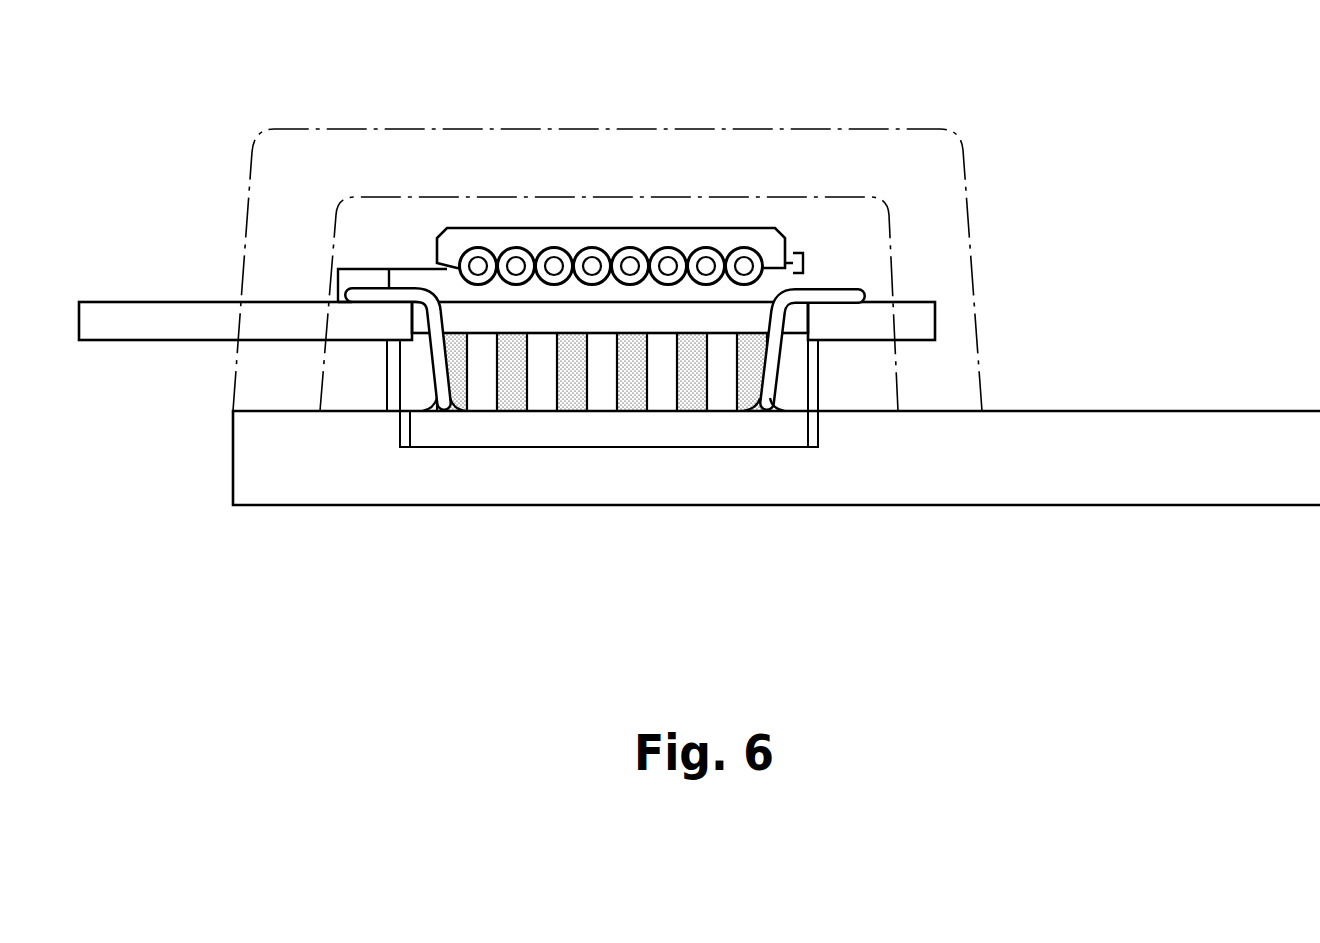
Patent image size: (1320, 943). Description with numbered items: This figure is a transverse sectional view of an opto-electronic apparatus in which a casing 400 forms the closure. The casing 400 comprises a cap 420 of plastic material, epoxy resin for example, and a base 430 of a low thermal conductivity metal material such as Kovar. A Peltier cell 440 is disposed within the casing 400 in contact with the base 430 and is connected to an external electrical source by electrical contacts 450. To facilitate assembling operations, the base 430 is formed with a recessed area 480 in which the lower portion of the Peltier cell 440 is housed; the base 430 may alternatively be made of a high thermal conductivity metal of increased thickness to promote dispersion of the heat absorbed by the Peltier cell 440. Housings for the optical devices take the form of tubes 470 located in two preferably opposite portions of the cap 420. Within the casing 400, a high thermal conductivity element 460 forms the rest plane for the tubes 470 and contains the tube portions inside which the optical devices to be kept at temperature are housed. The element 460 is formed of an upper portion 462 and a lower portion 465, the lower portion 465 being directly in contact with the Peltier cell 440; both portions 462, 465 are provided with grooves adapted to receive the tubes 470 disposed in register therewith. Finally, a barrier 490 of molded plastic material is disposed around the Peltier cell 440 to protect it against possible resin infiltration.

The casing 400 is at (223, 142).
The cap 420 is at (539, 146).
The base 430 is at (582, 478).
The Peltier cell 440 is at (685, 437).
The electrical contacts 450 is at (448, 412).
The high thermal conductivity element 460 is at (807, 265).
The upper portion 462 is at (452, 245).
The lower portion 465 is at (397, 265).
The tubes 470 is at (630, 250).
The recessed area 480 is at (405, 432).
The barrier 490 is at (400, 378).